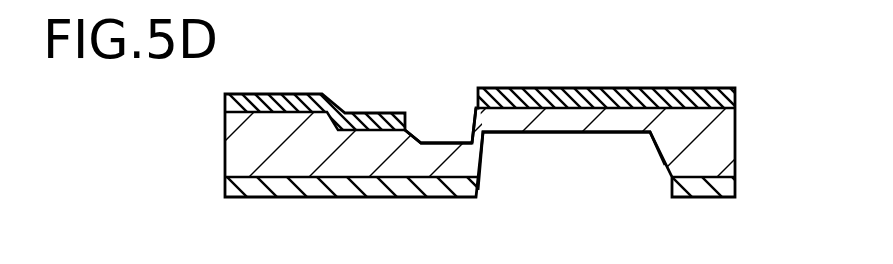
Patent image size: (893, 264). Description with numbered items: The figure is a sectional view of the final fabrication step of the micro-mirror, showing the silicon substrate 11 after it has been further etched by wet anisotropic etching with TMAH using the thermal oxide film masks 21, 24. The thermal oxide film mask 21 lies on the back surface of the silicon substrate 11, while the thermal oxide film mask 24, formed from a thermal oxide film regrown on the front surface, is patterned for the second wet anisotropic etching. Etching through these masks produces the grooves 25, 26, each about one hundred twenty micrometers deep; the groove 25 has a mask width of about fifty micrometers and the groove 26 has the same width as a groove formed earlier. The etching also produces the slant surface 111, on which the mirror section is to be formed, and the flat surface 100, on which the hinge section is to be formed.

The flat surface 100 is at (456, 132).
The silicon substrate 11 is at (725, 145).
The thermal oxide film mask 21 is at (262, 191).
The thermal oxide film mask 24 is at (278, 94).
The groove 25 is at (443, 102).
The groove 26 is at (576, 175).
The slant surface 111 is at (471, 122).